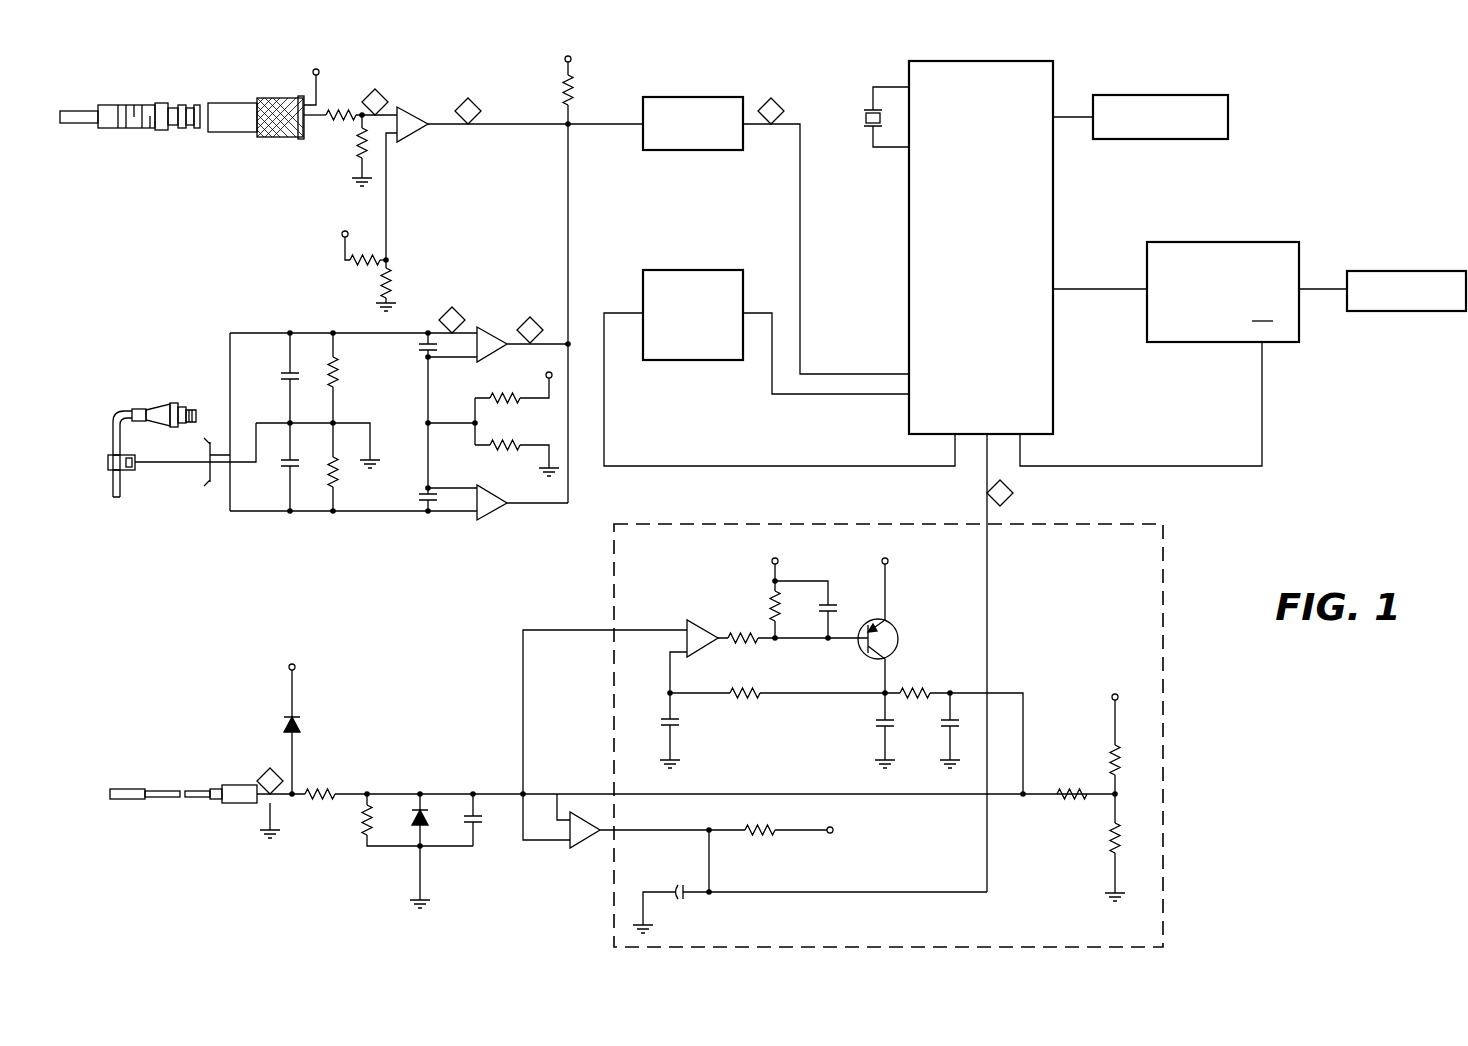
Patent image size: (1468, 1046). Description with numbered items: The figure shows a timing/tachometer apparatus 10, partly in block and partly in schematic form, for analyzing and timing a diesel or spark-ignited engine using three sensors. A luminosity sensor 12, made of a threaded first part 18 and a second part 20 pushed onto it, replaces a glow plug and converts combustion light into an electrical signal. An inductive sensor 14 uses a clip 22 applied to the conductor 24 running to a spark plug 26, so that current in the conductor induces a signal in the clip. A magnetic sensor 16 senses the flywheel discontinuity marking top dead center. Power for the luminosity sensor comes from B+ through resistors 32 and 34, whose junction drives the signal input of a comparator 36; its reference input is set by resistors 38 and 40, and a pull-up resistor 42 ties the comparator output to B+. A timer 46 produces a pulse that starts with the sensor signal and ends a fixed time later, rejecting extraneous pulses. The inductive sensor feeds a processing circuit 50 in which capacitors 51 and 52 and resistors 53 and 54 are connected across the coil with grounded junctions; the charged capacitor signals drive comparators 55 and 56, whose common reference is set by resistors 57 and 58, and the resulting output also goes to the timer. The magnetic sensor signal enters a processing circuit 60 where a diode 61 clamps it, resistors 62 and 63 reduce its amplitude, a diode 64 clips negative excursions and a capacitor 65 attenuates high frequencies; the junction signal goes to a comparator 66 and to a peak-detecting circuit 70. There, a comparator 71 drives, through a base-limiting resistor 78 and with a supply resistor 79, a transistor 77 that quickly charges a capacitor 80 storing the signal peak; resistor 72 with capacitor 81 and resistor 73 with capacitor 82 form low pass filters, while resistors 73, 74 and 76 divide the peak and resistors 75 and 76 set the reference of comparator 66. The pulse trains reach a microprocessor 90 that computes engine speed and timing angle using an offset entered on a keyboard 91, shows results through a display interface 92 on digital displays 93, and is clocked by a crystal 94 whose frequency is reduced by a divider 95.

The timing/tachometer apparatus 10 is at (192, 597).
The luminosity sensor 12 is at (183, 151).
The inductive sensor 14 is at (131, 482).
The magnetic sensor 16 is at (171, 784).
The first part 18 is at (148, 104).
The second part 20 is at (230, 104).
The clip 22 is at (108, 457).
The conductor 24 is at (121, 412).
The spark plug 26 is at (160, 404).
The resistor 32 is at (340, 111).
The resistor 34 is at (355, 145).
The comparator 36 is at (406, 111).
The resistor 38 is at (358, 268).
The resistor 40 is at (394, 284).
The pull-up resistor 42 is at (576, 93).
The timer 46 is at (712, 97).
The processing circuit 50 is at (411, 532).
The capacitor 51 is at (281, 376).
The capacitor 52 is at (283, 468).
The resistor 53 is at (342, 376).
The resistor 54 is at (342, 476).
The comparator 55 is at (485, 327).
The comparator 56 is at (491, 521).
The resistor 57 is at (503, 404).
The resistor 58 is at (526, 446).
The processing circuit 60 is at (414, 686).
The diode 61 is at (301, 722).
The resistor 62 is at (329, 790).
The resistor 63 is at (362, 823).
The diode 64 is at (431, 819).
The capacitor 65 is at (480, 827).
The comparator 66 is at (595, 851).
The peak-detecting circuit 70 is at (612, 567).
The comparator 71 is at (708, 628).
The resistor 72 is at (748, 704).
The resistor 73 is at (918, 686).
The resistor 74 is at (1070, 788).
The resistor 75 is at (1120, 753).
The resistor 76 is at (1120, 841).
The transistor 77 is at (897, 631).
The resistor 78 is at (750, 645).
The resistor 79 is at (783, 611).
The capacitor 80 is at (876, 727).
The capacitor 81 is at (680, 727).
The capacitor 82 is at (946, 726).
The microprocessor 90 is at (1055, 200).
The keyboard 91 is at (1190, 95).
The display interface 92 is at (1264, 242).
The digital displays 93 is at (1385, 271).
The crystal 94 is at (866, 114).
The divider 95 is at (712, 362).